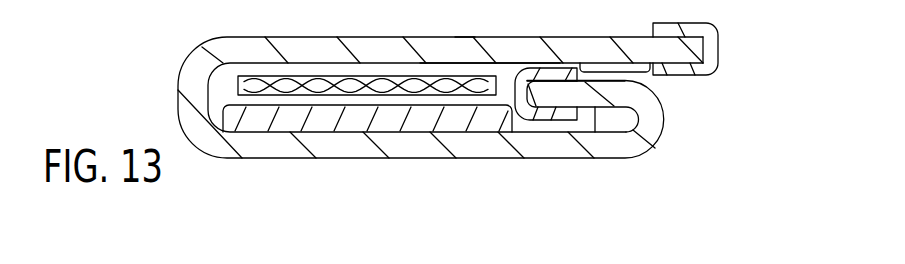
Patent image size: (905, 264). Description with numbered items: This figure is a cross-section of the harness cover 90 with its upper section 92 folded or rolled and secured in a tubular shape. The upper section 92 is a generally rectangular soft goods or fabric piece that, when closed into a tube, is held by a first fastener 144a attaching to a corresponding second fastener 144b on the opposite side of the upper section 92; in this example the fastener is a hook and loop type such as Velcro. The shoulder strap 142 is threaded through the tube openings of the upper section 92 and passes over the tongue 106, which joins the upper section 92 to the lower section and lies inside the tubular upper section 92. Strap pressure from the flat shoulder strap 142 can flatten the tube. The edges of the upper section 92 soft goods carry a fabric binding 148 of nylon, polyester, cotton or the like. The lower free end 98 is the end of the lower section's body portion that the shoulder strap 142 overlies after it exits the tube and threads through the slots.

The harness cover 90 is at (165, 37).
The upper section 92 is at (513, 63).
The lower free end 98 is at (465, 18).
The tongue 106 is at (251, 122).
The shoulder strap 142 is at (317, 85).
The first fastener 144a is at (605, 70).
The second fastener 144b is at (635, 78).
The fabric binding 148 is at (712, 52).